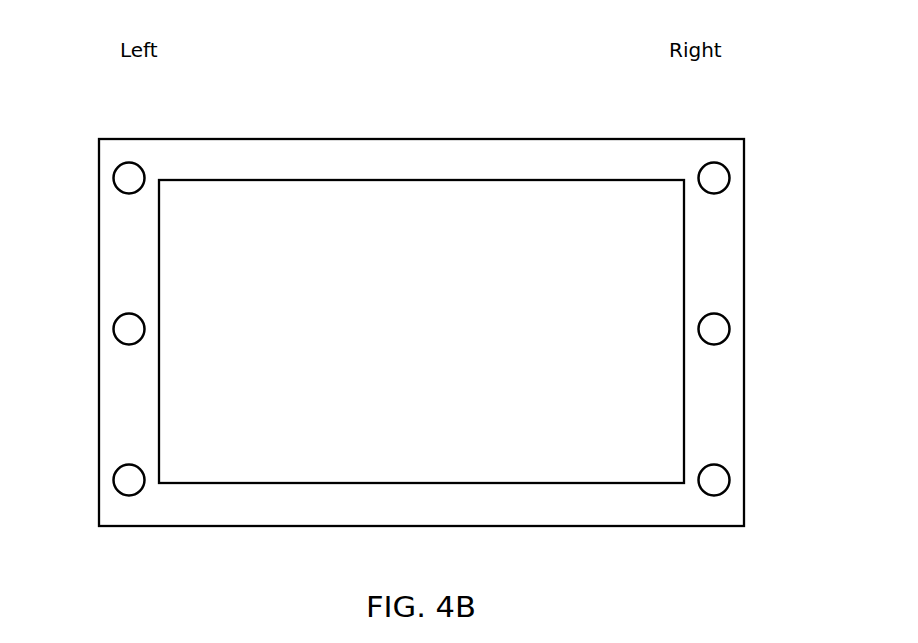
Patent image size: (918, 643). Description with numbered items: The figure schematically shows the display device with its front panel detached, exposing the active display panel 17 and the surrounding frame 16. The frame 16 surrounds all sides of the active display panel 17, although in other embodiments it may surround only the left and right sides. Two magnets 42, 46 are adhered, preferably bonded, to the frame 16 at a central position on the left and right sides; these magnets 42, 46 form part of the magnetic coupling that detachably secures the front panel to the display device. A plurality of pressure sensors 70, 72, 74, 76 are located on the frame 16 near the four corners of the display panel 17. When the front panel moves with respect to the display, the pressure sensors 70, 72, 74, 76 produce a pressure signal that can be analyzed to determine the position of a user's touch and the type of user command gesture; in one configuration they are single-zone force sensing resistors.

The frame 16 is at (600, 157).
The active display panel 17 is at (215, 204).
The pressure sensor 70 is at (113, 180).
The magnet 42 is at (113, 330).
The pressure sensor 72 is at (113, 481).
The pressure sensor 74 is at (730, 180).
The magnet 46 is at (730, 331).
The pressure sensor 76 is at (730, 482).